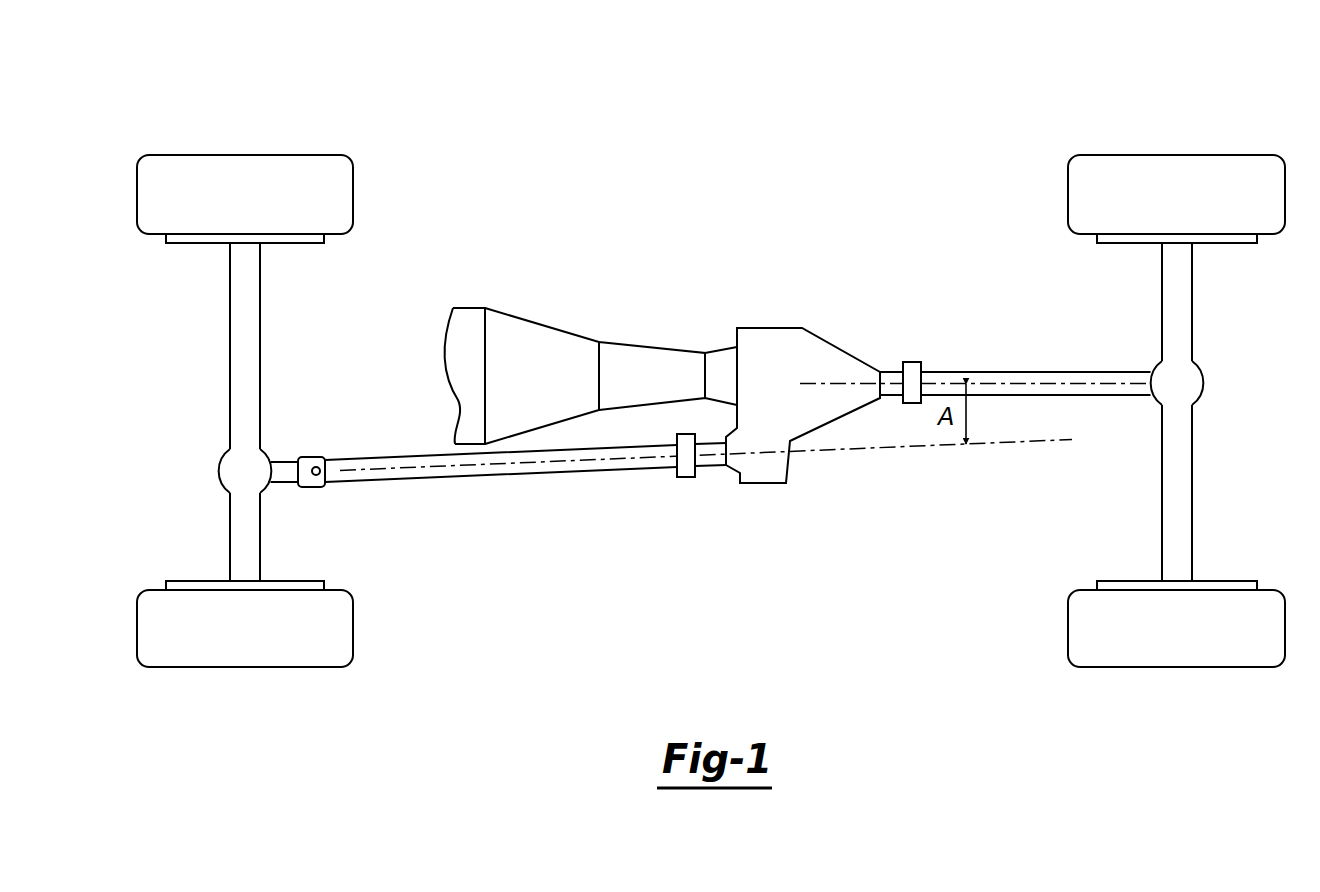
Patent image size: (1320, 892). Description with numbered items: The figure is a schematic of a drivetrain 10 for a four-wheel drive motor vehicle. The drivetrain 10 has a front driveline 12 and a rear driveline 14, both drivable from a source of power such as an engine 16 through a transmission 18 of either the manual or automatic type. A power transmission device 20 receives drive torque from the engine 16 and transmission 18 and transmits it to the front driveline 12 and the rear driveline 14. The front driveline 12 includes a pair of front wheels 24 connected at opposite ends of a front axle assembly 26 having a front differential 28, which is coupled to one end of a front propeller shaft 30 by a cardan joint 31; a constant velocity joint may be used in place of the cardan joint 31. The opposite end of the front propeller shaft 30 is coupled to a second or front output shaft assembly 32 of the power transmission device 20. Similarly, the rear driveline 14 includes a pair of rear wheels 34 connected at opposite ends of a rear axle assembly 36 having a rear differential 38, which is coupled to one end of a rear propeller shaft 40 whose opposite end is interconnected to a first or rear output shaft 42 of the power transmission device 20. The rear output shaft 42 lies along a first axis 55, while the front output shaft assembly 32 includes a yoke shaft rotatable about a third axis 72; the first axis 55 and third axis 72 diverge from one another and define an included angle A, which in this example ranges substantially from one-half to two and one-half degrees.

The drivetrain 10 is at (934, 236).
The front driveline 12 is at (288, 406).
The rear driveline 14 is at (1097, 352).
The engine 16 is at (473, 317).
The transmission 18 is at (631, 350).
The power transmission device 20 is at (824, 334).
The front wheels 24 is at (185, 160).
The front axle assembly 26 is at (235, 321).
The front differential 28 is at (225, 466).
The front propeller shaft 30 is at (409, 463).
The cardan joint 31 is at (311, 456).
The front output shaft assembly 32 is at (711, 478).
The rear wheels 34 is at (1181, 160).
The rear axle assembly 36 is at (1174, 319).
The rear differential 38 is at (1196, 378).
The rear propeller shaft 40 is at (1112, 396).
The rear output shaft 42 is at (895, 361).
The first axis 55 is at (985, 371).
The third axis 72 is at (886, 453).